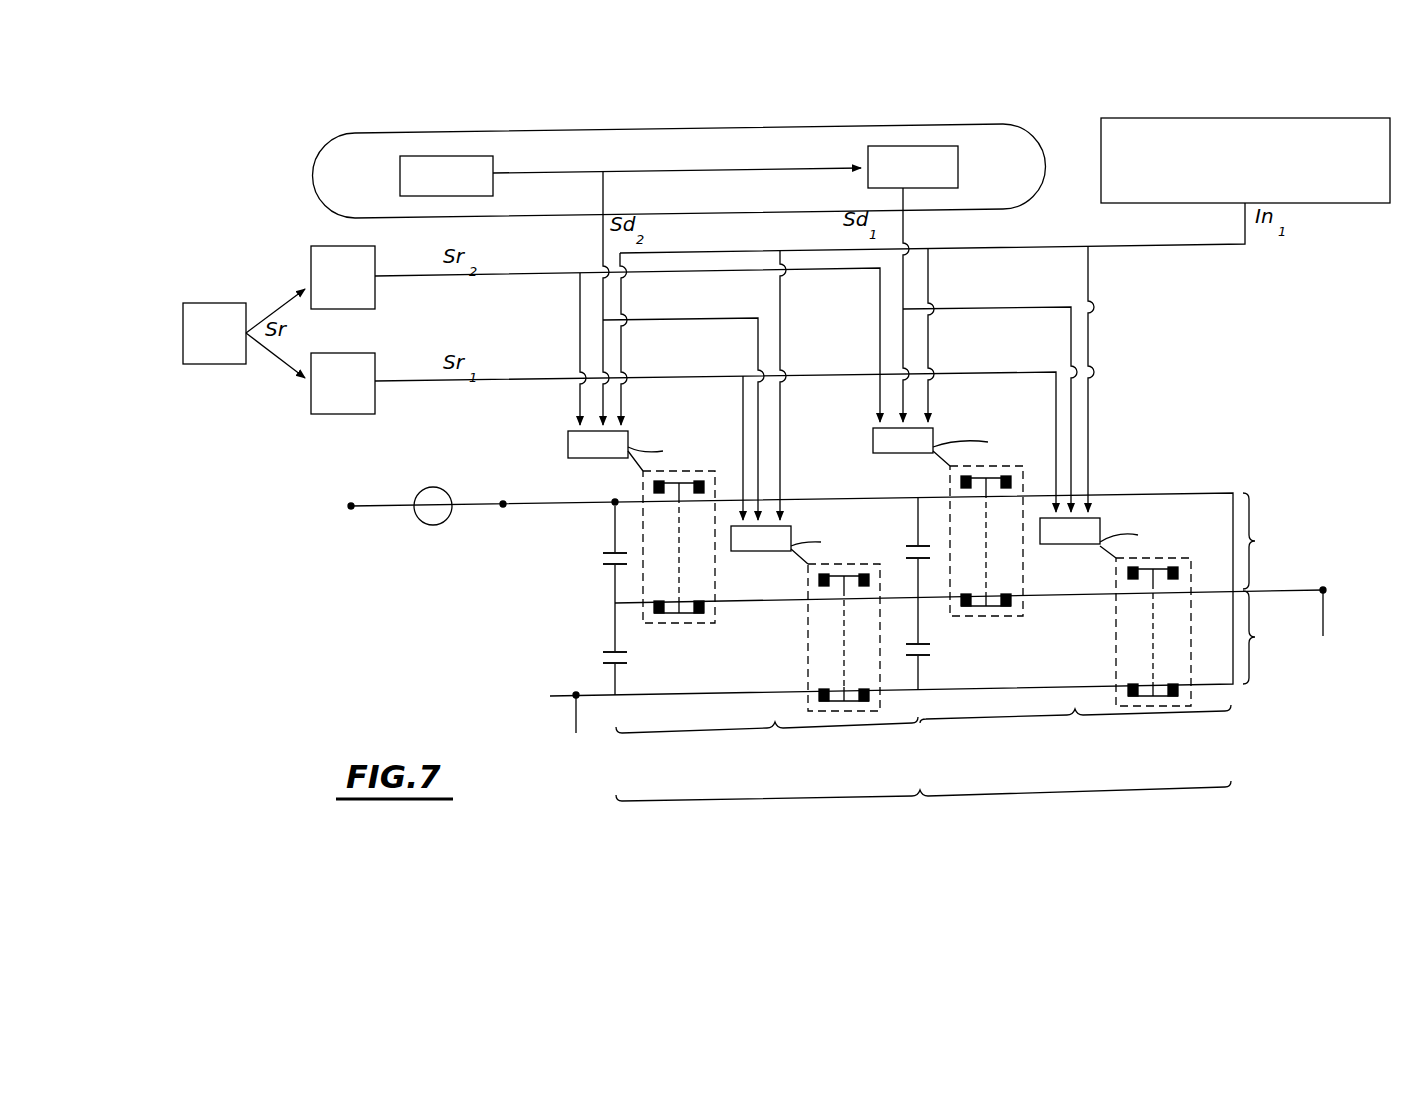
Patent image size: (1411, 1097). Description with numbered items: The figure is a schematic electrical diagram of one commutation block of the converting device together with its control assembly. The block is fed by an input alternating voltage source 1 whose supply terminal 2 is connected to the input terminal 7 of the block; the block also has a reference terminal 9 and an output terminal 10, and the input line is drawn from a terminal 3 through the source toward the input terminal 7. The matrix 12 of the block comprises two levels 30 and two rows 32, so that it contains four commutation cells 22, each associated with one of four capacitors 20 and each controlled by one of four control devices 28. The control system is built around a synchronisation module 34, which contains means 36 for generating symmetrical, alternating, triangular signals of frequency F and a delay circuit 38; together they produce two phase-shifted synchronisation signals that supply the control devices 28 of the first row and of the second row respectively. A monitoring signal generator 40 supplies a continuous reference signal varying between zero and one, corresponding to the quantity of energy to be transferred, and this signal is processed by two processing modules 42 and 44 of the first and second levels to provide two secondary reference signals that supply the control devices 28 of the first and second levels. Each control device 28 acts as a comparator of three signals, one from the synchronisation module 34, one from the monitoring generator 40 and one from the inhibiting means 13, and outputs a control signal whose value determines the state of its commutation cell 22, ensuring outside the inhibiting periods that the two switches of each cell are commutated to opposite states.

The input alternating voltage source 1 is at (430, 524).
The supply terminal 2 is at (500, 505).
The input terminal 3 is at (348, 506).
The input terminal 7 is at (612, 508).
The reference terminal 9 is at (550, 696).
The output terminal 10 is at (1320, 588).
The matrix 12 is at (923, 814).
The inhibiting means 13 is at (1245, 160).
The capacitor 20 is at (988, 660).
The commutation cell 22 is at (1250, 712).
The control device 28 is at (1118, 482).
The level 30 is at (1263, 532).
The row 32 is at (923, 742).
The synchronisation module 34 is at (612, 128).
The means for generating symmetrical, alternating, triangular signals 36 is at (447, 155).
The delay circuit 38 is at (899, 145).
The monitoring signal generator 40 is at (202, 333).
The processing module 42 is at (352, 400).
The processing module 44 is at (335, 262).